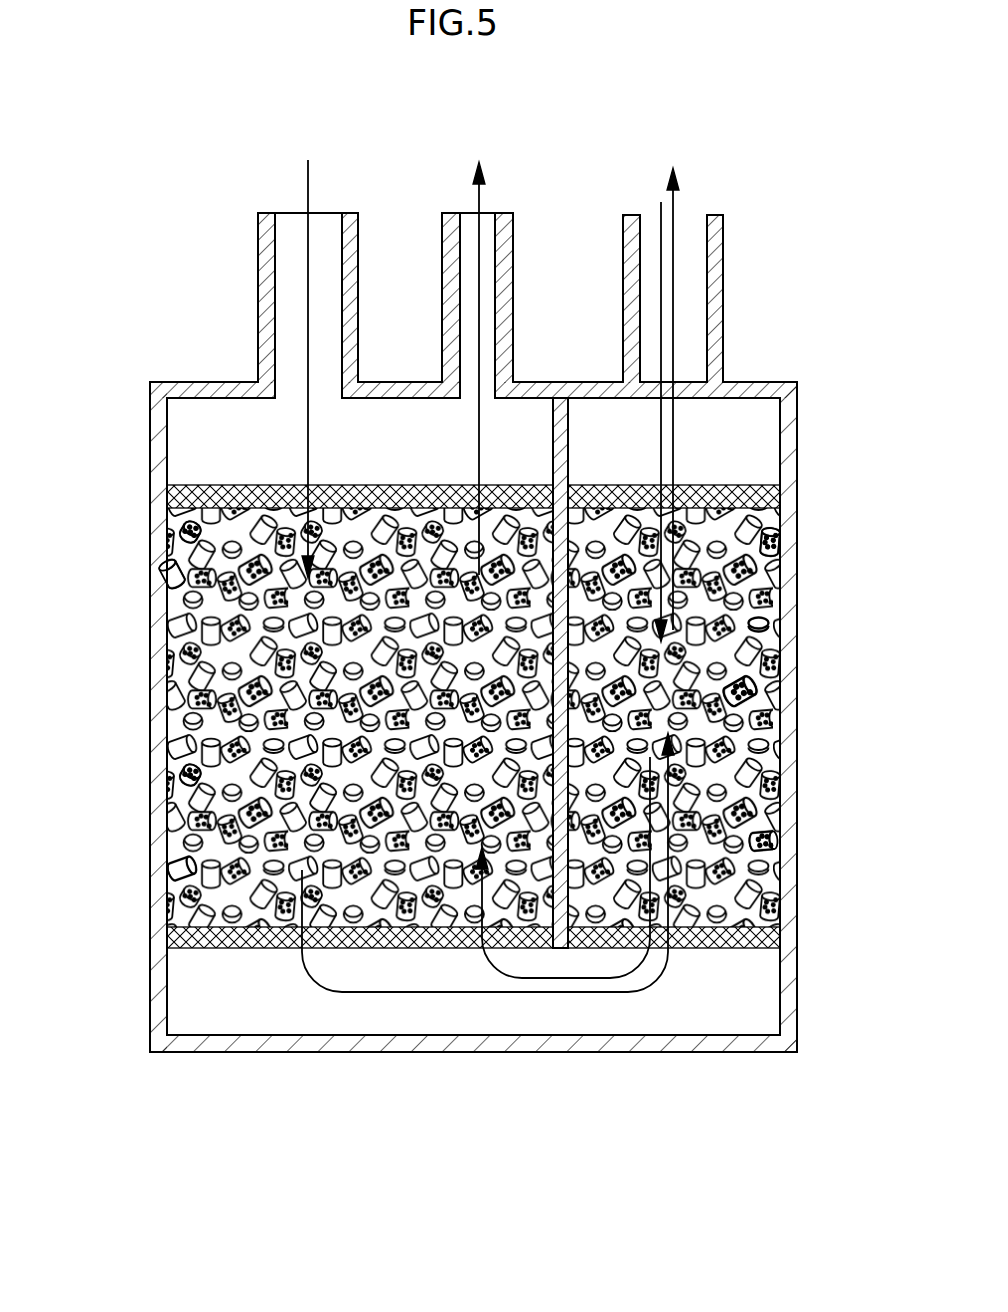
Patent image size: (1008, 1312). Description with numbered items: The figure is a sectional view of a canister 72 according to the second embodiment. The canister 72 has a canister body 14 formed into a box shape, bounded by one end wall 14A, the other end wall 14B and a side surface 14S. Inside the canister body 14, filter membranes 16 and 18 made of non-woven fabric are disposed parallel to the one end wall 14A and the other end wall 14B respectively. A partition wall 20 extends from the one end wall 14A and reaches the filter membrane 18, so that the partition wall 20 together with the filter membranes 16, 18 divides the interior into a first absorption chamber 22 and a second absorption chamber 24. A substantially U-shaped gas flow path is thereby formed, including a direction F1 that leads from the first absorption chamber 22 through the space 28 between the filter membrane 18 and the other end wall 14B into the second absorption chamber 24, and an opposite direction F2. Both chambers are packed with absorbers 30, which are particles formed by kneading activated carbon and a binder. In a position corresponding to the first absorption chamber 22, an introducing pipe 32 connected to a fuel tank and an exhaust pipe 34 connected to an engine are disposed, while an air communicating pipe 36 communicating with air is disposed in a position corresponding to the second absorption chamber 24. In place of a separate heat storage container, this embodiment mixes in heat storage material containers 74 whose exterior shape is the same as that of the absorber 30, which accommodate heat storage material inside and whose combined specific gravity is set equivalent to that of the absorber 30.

The canister body 14 is at (790, 440).
The one end wall 14A is at (205, 392).
The other end wall 14B is at (232, 1053).
The side surface 14S is at (170, 672).
The filter membrane 16 is at (168, 492).
The filter membrane 18 is at (168, 937).
The partition wall 20 is at (566, 410).
The first absorption chamber 22 is at (168, 598).
The second absorption chamber 24 is at (757, 584).
The space 28 is at (246, 1009).
The absorber 30 is at (176, 569).
The introducing pipe 32 is at (262, 232).
The exhaust pipe 34 is at (448, 232).
The air communicating pipe 36 is at (712, 233).
The canister 72 is at (757, 145).
The heat storage material container 74 is at (172, 538).
The direction F1 is at (438, 994).
The direction F2 is at (572, 980).